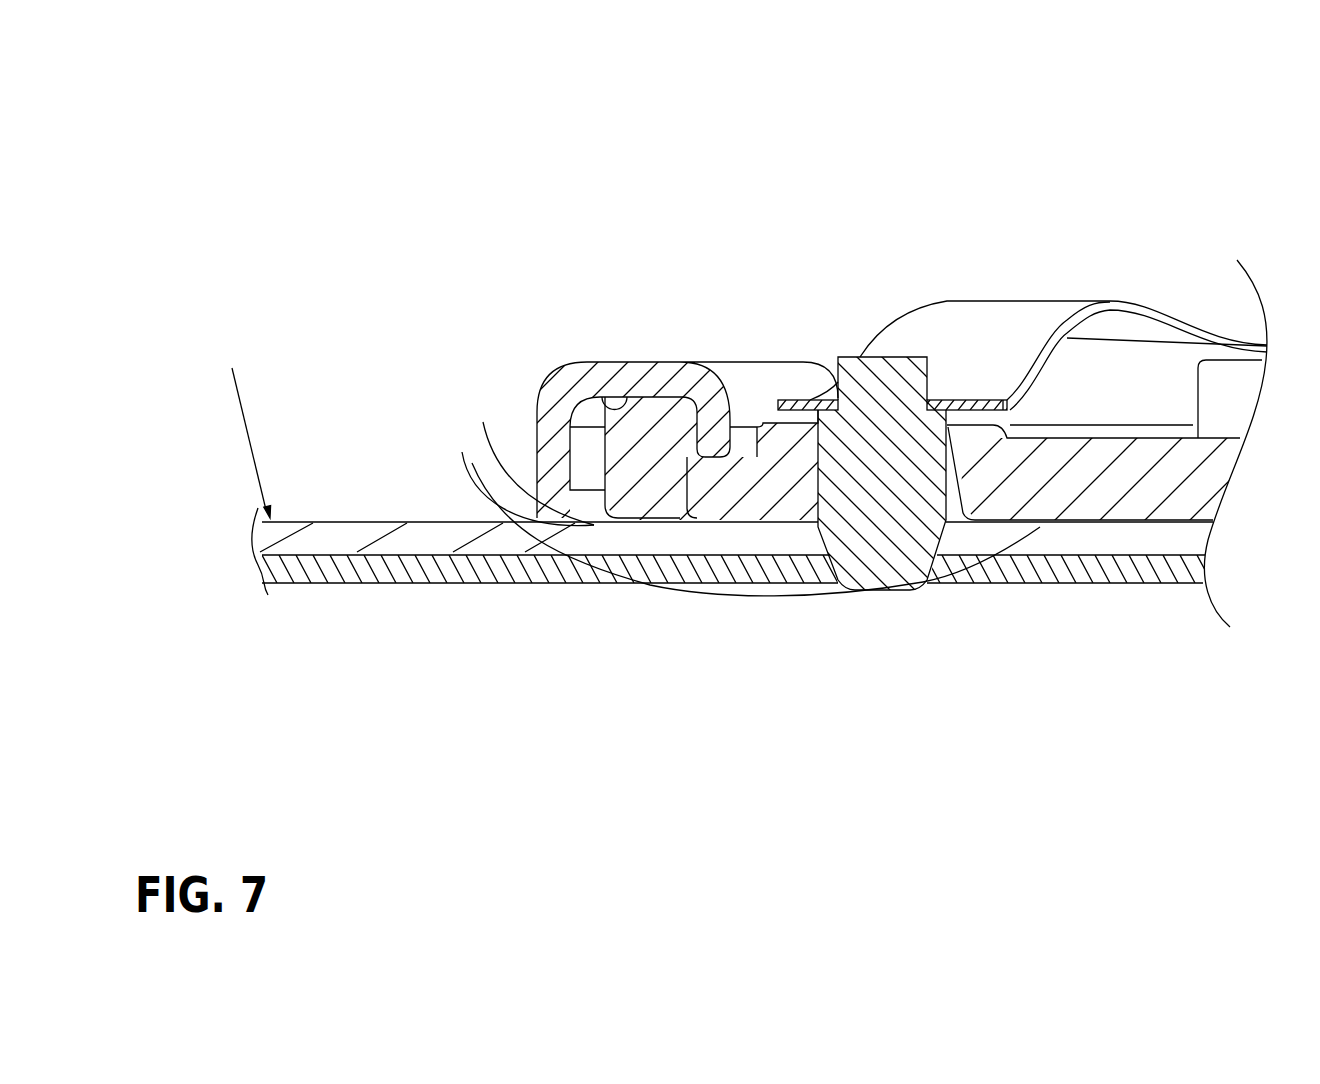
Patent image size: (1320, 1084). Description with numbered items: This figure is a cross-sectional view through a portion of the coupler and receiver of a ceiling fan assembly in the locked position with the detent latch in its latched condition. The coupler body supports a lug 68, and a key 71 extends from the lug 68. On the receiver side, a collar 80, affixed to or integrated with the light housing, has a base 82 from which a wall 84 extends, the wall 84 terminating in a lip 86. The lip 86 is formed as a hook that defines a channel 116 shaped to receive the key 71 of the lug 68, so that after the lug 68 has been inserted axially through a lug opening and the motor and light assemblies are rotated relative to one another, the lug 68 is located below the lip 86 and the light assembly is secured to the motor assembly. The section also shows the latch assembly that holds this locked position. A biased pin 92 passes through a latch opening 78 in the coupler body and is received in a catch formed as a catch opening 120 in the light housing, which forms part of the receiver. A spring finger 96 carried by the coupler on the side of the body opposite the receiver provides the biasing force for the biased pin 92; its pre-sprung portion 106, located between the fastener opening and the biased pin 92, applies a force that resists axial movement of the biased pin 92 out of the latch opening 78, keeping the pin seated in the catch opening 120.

The lug 68 is at (657, 520).
The key 71 is at (660, 420).
The latch opening 78 is at (808, 498).
The collar 80 is at (243, 429).
The base 82 is at (429, 520).
The wall 84 is at (538, 453).
The lip 86 is at (620, 362).
The biased pin 92 is at (877, 357).
The spring finger 96 is at (1033, 300).
The pre-sprung portion 106 is at (973, 300).
The channel 116 is at (602, 420).
The catch opening 120 is at (927, 582).